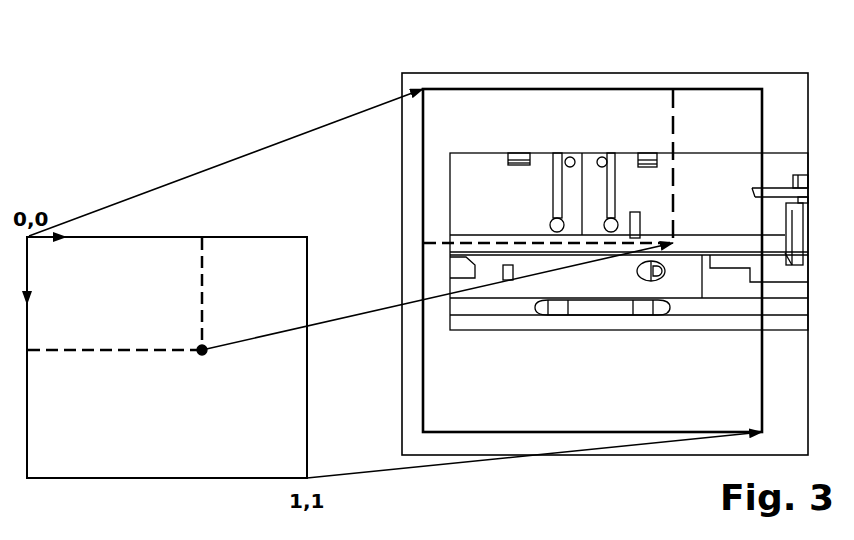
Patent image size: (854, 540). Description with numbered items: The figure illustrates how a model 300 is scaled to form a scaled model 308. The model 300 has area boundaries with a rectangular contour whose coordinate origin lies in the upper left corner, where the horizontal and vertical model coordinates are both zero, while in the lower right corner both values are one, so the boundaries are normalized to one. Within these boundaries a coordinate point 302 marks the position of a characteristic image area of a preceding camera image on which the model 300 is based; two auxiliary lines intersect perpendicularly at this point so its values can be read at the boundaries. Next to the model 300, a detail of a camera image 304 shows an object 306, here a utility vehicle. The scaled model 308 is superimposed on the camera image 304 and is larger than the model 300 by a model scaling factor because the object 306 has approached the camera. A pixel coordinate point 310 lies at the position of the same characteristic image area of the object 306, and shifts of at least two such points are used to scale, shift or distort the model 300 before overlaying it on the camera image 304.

The model 300 is at (120, 236).
The coordinate point 302 is at (202, 356).
The camera image 304 is at (420, 72).
The object 306 is at (728, 180).
The scaled model 308 is at (529, 88).
The pixel coordinate point 310 is at (671, 241).